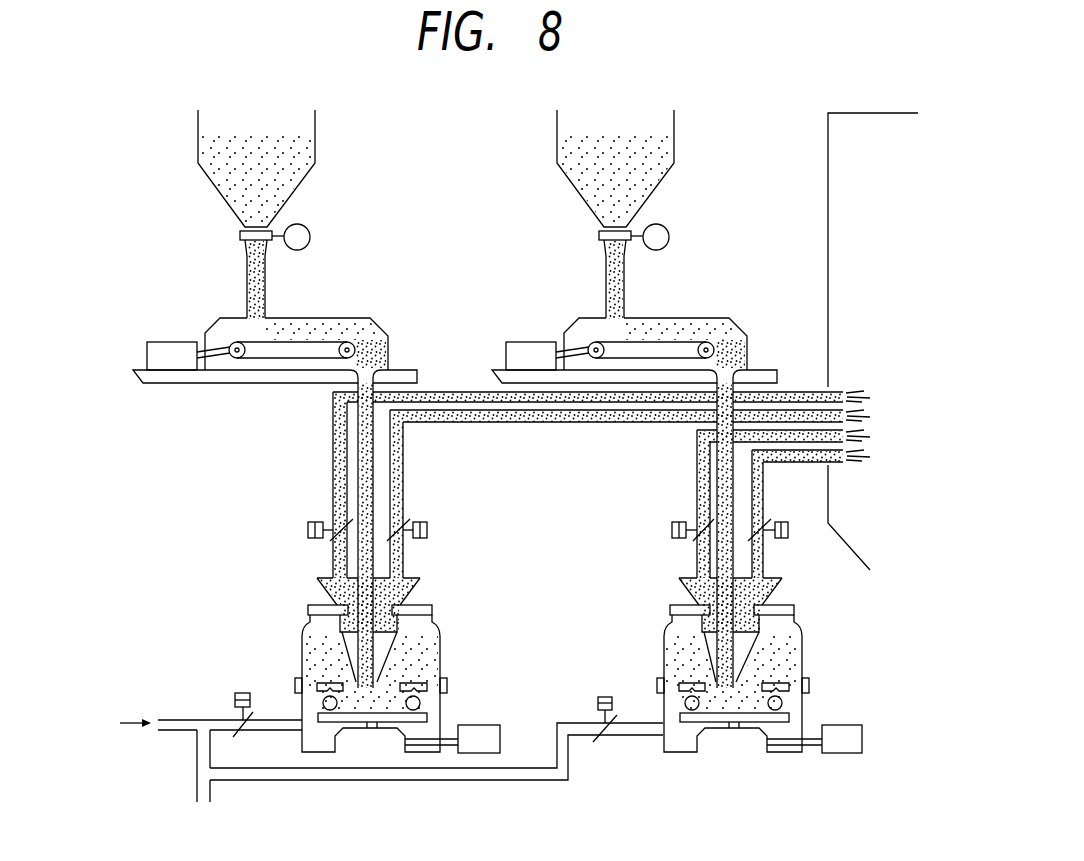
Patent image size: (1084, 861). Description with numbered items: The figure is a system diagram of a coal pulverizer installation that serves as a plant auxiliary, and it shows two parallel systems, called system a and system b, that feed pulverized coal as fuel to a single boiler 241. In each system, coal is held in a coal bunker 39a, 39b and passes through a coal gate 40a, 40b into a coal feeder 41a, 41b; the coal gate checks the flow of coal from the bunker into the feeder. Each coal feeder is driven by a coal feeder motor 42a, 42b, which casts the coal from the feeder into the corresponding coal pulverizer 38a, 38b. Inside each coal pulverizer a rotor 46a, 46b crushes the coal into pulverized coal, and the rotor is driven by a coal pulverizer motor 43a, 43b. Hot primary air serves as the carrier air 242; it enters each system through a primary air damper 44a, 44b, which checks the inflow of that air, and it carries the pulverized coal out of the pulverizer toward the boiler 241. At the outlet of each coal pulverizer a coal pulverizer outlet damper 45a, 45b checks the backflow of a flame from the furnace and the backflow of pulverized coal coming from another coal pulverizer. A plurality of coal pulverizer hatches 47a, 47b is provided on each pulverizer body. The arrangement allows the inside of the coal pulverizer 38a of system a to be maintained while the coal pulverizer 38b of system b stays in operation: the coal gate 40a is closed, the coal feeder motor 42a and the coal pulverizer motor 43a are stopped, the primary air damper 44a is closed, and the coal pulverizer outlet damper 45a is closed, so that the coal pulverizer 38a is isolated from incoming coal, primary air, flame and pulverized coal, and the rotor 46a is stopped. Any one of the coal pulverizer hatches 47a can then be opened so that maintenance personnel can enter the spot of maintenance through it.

The coal bunker 39a is at (305, 132).
The coal bunker 39b is at (666, 132).
The coal gate 40a is at (240, 236).
The coal gate 40b is at (599, 236).
The coal feeder 41a is at (325, 318).
The coal feeder 41b is at (703, 318).
The coal feeder motor 42a is at (172, 342).
The coal feeder motor 42b is at (531, 342).
The coal pulverizer outlet damper 45a is at (330, 518).
The coal pulverizer outlet damper 45b is at (695, 518).
The rotor 46a is at (318, 682).
The rotor 46b is at (680, 683).
The coal pulverizer hatch 47a is at (310, 656).
The coal pulverizer hatch 47b is at (657, 683).
The coal pulverizer 38a is at (440, 640).
The coal pulverizer 38b is at (800, 640).
The coal pulverizer motor 43a is at (500, 738).
The coal pulverizer motor 43b is at (862, 738).
The primary air damper 44a is at (237, 695).
The primary air damper 44b is at (602, 696).
The boiler 241 is at (872, 112).
The carrier air 242 is at (132, 712).